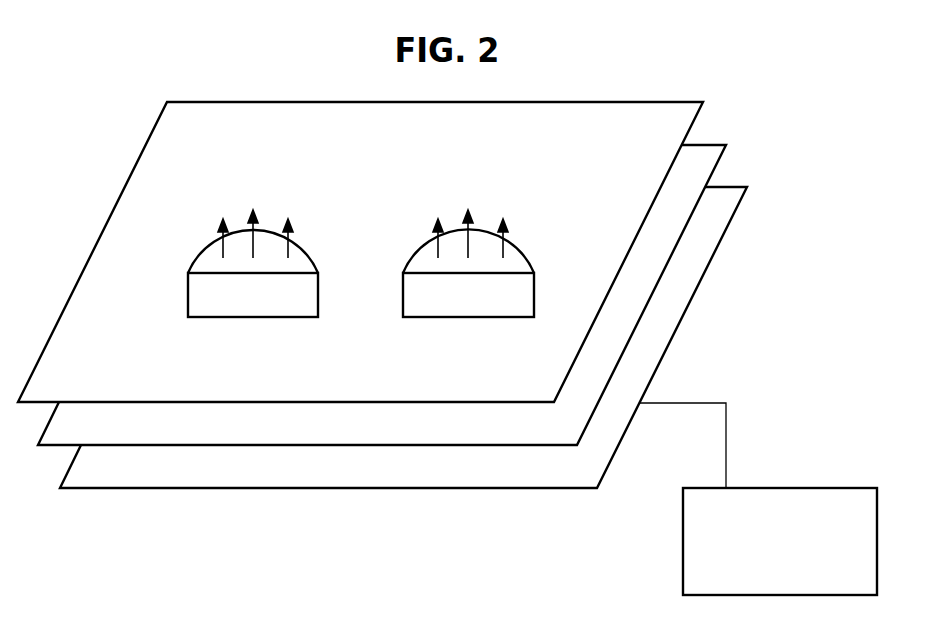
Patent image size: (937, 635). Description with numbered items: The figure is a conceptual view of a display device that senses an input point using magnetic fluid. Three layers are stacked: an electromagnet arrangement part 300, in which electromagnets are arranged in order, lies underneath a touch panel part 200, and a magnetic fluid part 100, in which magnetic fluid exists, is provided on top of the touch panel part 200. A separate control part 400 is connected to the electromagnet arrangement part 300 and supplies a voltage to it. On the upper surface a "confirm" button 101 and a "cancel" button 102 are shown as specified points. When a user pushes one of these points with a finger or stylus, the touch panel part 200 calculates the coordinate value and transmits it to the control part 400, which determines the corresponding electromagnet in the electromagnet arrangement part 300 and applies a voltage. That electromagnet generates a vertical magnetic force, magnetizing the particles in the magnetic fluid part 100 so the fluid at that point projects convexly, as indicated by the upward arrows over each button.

The magnetic fluid part 100 is at (632, 248).
The touch panel part 200 is at (653, 292).
The electromagnet arrangement part 300 is at (675, 335).
The control part 400 is at (778, 488).
The confirm button 101 is at (272, 208).
The cancel button 102 is at (491, 208).